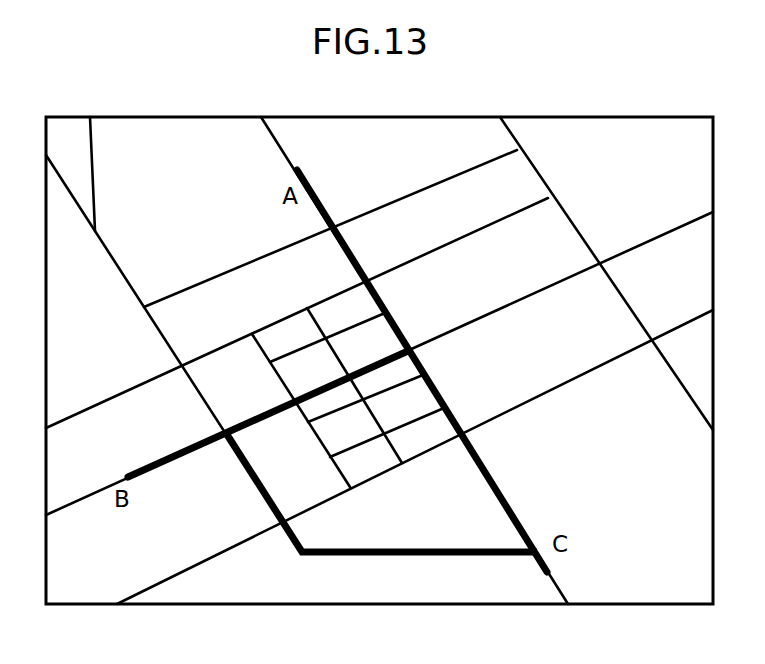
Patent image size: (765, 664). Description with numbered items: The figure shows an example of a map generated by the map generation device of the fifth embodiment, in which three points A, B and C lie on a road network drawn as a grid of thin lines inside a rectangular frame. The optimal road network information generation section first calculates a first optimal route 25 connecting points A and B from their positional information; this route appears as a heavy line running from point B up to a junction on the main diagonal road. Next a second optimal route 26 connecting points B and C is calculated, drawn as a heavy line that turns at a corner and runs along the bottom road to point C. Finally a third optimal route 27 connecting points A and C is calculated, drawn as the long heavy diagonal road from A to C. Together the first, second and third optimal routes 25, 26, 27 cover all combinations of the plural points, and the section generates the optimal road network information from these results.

The first optimal route 25 is at (279, 409).
The second optimal route 26 is at (394, 556).
The third optimal route 27 is at (486, 474).